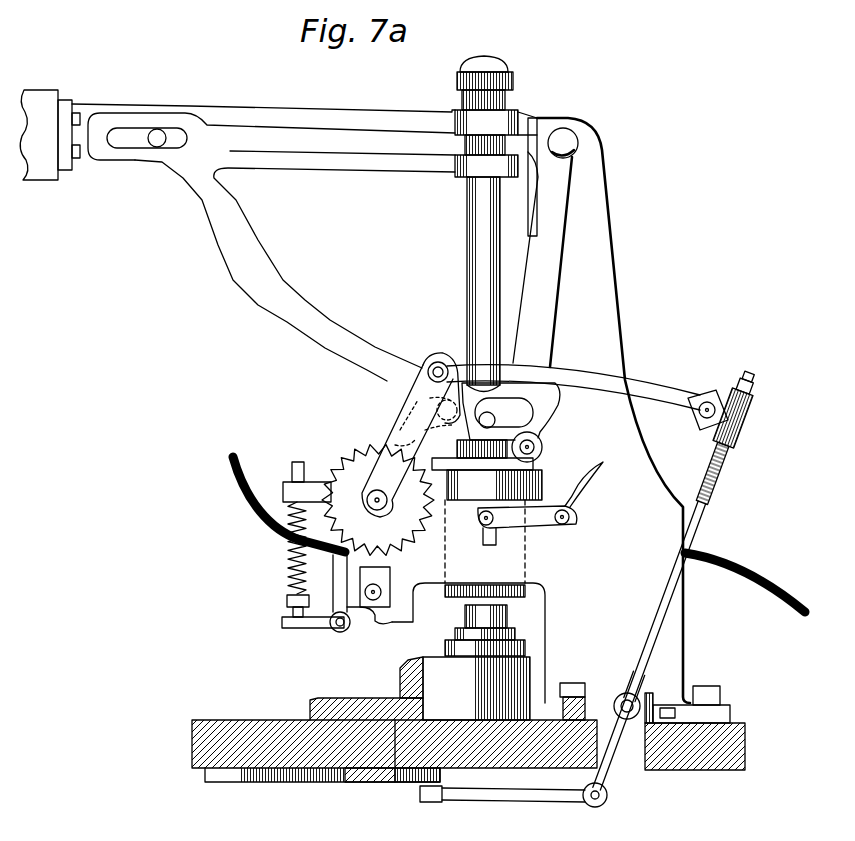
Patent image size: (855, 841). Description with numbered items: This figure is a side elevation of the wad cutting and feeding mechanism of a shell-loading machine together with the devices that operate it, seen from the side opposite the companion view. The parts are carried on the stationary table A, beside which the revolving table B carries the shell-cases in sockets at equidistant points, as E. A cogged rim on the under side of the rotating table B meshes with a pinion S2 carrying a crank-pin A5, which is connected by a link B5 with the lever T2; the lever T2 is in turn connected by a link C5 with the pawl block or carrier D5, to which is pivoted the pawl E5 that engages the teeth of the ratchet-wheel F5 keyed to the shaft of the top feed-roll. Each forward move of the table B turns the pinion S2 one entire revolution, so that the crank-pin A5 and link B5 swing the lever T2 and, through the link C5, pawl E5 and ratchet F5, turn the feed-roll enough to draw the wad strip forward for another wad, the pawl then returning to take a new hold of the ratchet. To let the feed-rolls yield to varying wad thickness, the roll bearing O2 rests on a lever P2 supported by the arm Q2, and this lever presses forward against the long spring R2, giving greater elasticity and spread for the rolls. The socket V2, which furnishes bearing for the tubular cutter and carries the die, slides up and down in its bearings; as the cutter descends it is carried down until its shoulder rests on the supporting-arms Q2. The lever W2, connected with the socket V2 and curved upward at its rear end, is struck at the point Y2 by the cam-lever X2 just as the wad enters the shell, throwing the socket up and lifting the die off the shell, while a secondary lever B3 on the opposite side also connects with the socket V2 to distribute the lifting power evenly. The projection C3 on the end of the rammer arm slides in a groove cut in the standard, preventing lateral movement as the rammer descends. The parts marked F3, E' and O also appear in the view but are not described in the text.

The secondary lever B3 is at (312, 101).
The cam-lever X2 is at (310, 272).
The projection C3 is at (535, 118).
The strut F3 is at (578, 290).
The link C5 is at (640, 386).
The pawl block or carrier D5 is at (418, 368).
The pawl E5 is at (405, 413).
The ratchet-wheel F5 is at (420, 534).
The point Y2 is at (585, 462).
The socket V2 is at (487, 520).
The lever W2 is at (568, 492).
The supporting-arm Q2 is at (468, 620).
The bearing O2 is at (380, 592).
The lever P2 is at (292, 622).
The spring R2 is at (280, 557).
The pedestal collar E' is at (464, 620).
The sockets E is at (476, 689).
The revolving table B is at (258, 700).
The stationary table A is at (664, 726).
The plate O is at (368, 780).
The pinion S2 is at (405, 784).
The crank-pin A5 is at (432, 803).
The link B5 is at (515, 798).
The lever T2 is at (725, 616).